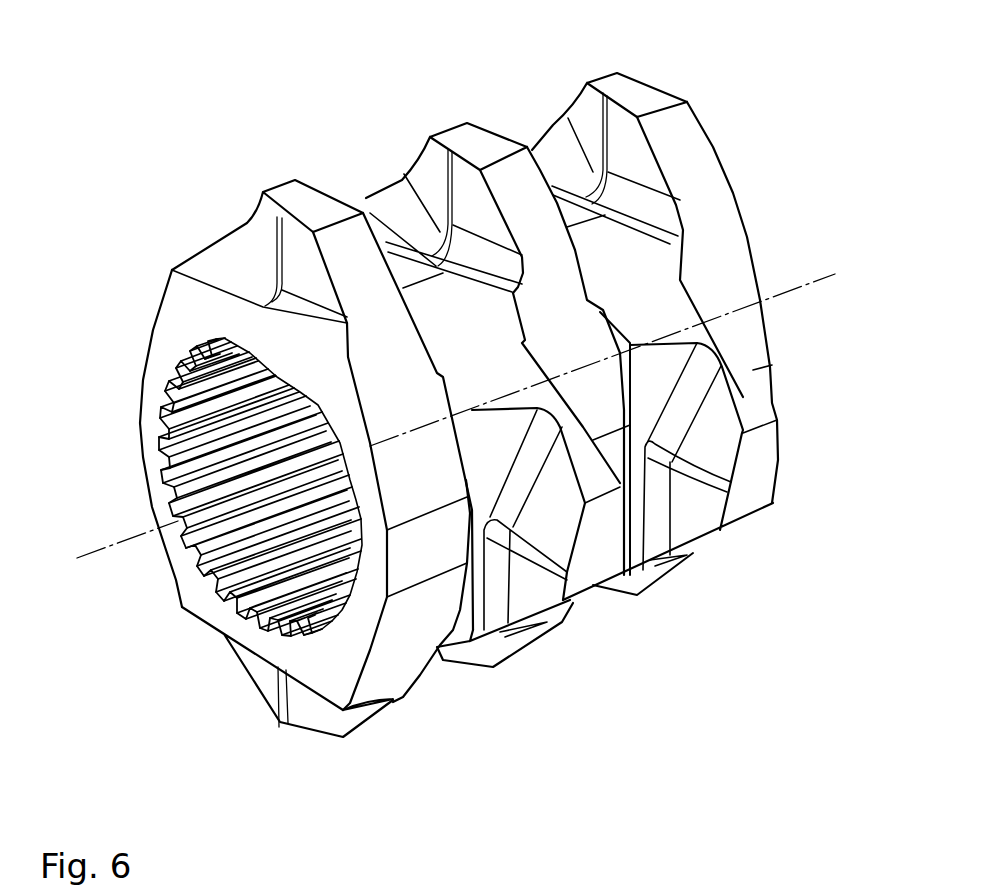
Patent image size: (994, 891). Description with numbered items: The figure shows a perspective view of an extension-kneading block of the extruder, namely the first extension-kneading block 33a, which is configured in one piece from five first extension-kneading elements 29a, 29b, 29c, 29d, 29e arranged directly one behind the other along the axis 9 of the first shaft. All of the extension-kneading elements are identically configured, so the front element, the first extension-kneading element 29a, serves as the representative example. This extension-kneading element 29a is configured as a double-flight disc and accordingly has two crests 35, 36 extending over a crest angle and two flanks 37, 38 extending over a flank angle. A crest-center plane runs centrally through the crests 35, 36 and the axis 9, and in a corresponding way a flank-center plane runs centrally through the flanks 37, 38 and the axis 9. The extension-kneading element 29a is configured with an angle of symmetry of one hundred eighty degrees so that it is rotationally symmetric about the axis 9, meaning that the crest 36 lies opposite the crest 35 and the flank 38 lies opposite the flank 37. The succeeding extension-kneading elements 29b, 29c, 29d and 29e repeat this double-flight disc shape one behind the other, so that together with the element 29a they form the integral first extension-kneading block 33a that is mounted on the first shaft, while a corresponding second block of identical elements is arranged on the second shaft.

The axis 9 is at (715, 310).
The first extension-kneading element 29a is at (428, 688).
The first extension-kneading element 29b is at (583, 603).
The first extension-kneading element 29c is at (449, 125).
The first extension-kneading element 29d is at (761, 520).
The first extension-kneading element 29e is at (722, 150).
The first extension-kneading block 33a is at (750, 204).
The crest 35 is at (283, 196).
The crest 36 is at (303, 736).
The flank 37 is at (143, 360).
The flank 38 is at (385, 692).